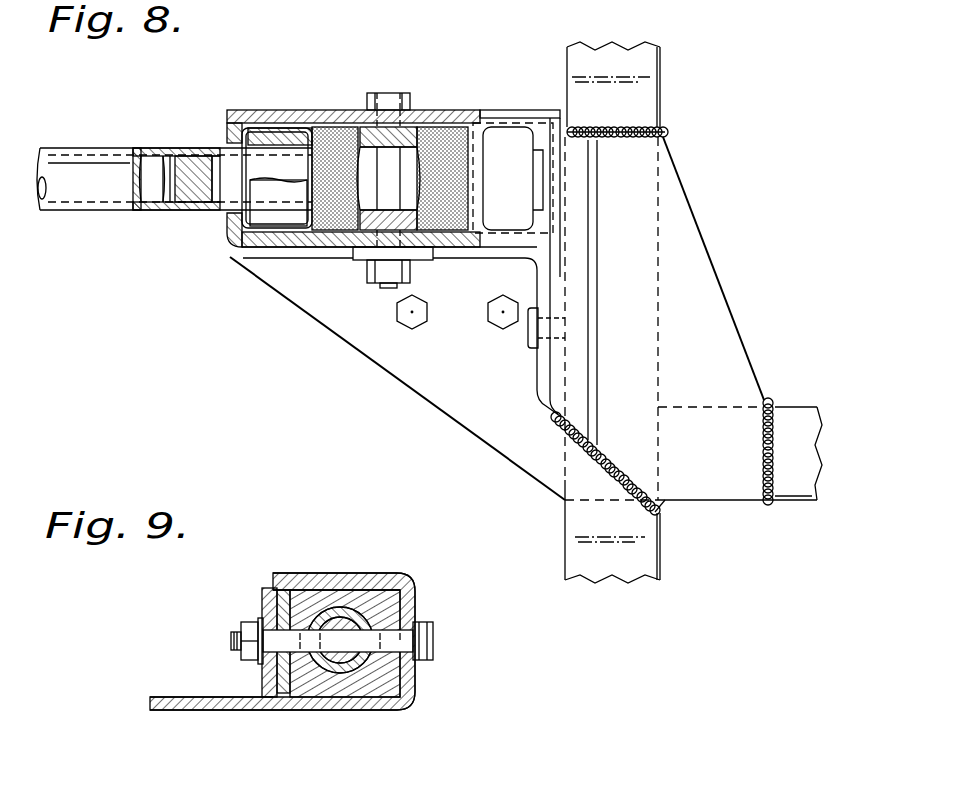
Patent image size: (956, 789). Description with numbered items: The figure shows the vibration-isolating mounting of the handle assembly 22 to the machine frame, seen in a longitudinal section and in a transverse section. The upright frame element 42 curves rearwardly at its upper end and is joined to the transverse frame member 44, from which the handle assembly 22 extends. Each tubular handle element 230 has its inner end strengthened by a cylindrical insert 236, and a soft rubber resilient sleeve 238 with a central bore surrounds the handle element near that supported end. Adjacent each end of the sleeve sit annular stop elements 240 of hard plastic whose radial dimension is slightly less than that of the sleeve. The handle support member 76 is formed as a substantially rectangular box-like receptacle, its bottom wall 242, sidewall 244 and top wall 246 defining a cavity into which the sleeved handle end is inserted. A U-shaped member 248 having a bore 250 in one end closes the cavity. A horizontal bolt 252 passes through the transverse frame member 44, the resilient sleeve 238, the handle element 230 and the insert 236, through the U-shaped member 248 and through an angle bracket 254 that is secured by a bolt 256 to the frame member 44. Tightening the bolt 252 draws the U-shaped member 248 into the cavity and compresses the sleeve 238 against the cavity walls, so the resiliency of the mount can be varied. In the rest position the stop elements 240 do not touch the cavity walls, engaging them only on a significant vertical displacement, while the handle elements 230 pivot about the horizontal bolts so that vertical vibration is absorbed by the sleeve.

In FIG. 8, the handle assembly 22 is at (174, 181).
In FIG. 8, the tubular handle element 230 is at (93, 213).
In FIG. 9, the tubular handle element 230 is at (360, 603).
In FIG. 8, the cylindrical insert 236 is at (190, 197).
In FIG. 9, the cylindrical insert 236 is at (337, 623).
In FIG. 8, the resilient sleeve 238 is at (330, 127).
In FIG. 9, the resilient sleeve 238 is at (413, 593).
In FIG. 8, the annular stop element 240 is at (480, 137).
In FIG. 8, the bottom wall 242 is at (427, 385).
In FIG. 9, the bottom wall 242 is at (370, 707).
In FIG. 8, the sidewall 244 is at (255, 110).
In FIG. 9, the sidewall 244 is at (410, 680).
In FIG. 8, the top wall 246 is at (518, 120).
In FIG. 9, the top wall 246 is at (293, 578).
In FIG. 8, the U-shaped member 248 is at (312, 247).
In FIG. 9, the U-shaped member 248 is at (283, 597).
In FIG. 8, the bore 250 is at (228, 146).
In FIG. 8, the bolt 252 is at (395, 96).
In FIG. 9, the bolt 252 is at (433, 630).
In FIG. 8, the angle bracket 254 is at (472, 258).
In FIG. 9, the angle bracket 254 is at (263, 677).
In FIG. 8, the bolt 256 is at (527, 330).
In FIG. 8, the handle support member 76 is at (330, 318).
In FIG. 9, the handle support member 76 is at (188, 713).
In FIG. 8, the upright frame element 42 is at (800, 410).
In FIG. 8, the transverse frame member 44 is at (645, 555).